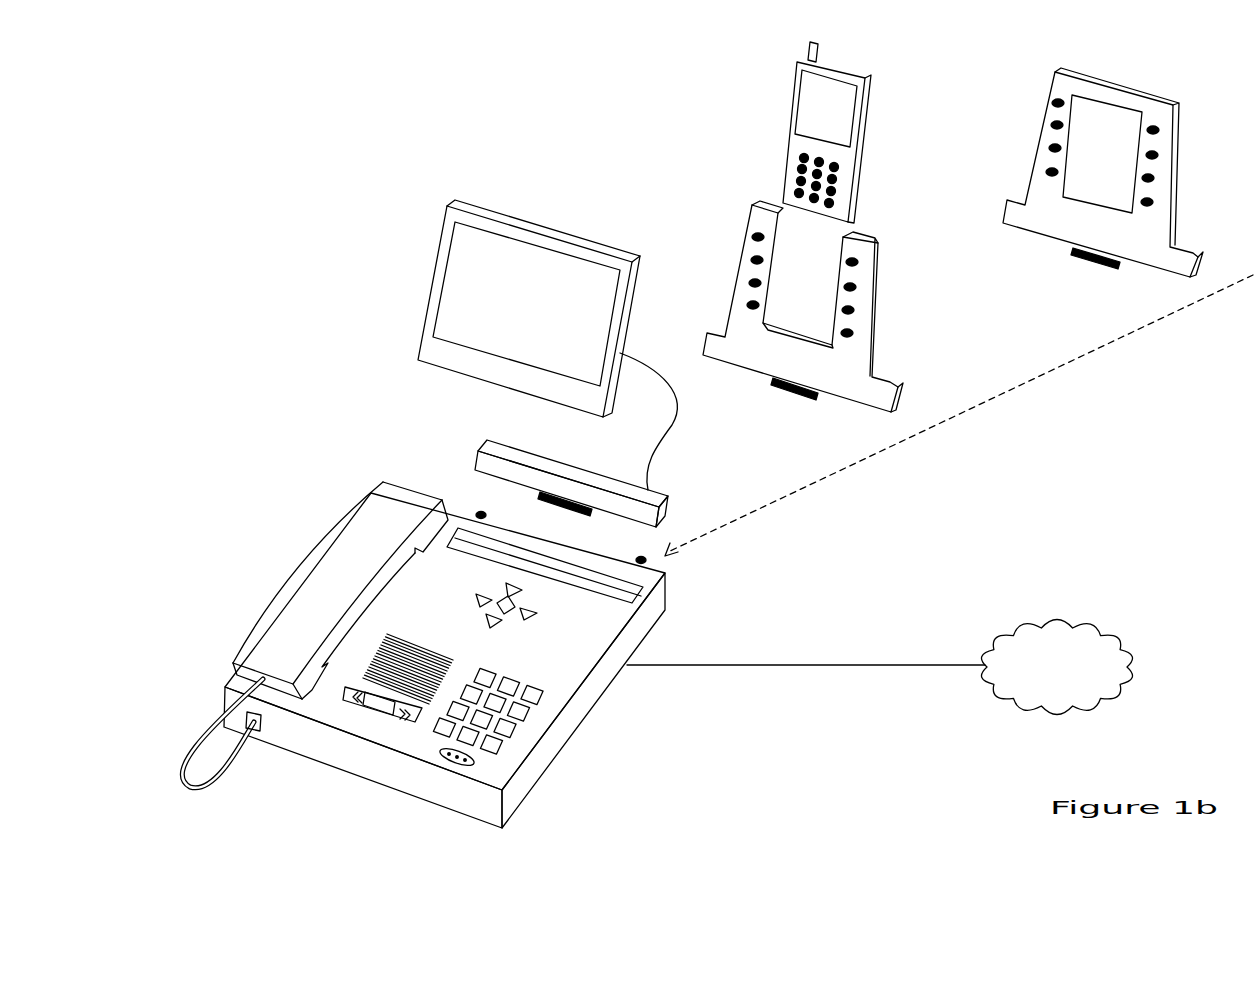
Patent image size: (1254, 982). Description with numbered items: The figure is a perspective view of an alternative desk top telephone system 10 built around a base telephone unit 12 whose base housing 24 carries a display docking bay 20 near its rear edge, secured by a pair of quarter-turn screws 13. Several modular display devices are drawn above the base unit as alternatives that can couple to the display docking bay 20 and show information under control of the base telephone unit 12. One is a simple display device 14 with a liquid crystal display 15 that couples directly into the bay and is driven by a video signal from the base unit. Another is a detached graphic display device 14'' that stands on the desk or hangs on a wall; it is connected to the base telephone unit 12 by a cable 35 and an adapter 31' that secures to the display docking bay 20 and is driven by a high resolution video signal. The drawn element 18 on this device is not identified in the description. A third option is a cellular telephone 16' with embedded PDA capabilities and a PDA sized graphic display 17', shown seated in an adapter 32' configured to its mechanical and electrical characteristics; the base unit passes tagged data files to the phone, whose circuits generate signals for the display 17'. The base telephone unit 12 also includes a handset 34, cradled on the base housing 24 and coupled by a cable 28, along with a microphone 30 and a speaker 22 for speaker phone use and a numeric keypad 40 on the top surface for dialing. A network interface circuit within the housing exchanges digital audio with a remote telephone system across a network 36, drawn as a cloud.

The desk top telephone system 10 is at (383, 117).
The base telephone unit 12 is at (668, 595).
The quarter-turn screws 13 is at (485, 514).
The simple display device 14 is at (1103, 154).
The detached graphic display device 14'' is at (529, 198).
The liquid crystal display 15 is at (1068, 115).
The cellular telephone 16' is at (781, 172).
The PDA sized graphic display 17' is at (787, 105).
The display screen 18 is at (437, 258).
The display docking bay 20 is at (637, 597).
The speaker 22 is at (427, 700).
The base housing 24 is at (610, 685).
The cable 28 is at (234, 753).
The microphone 30 is at (475, 764).
The adapter 31' is at (541, 469).
The adapter 32' is at (786, 306).
The handset 34 is at (327, 533).
The cable 35 is at (650, 466).
The network 36 is at (1068, 625).
The numeric keypad 40 is at (507, 730).